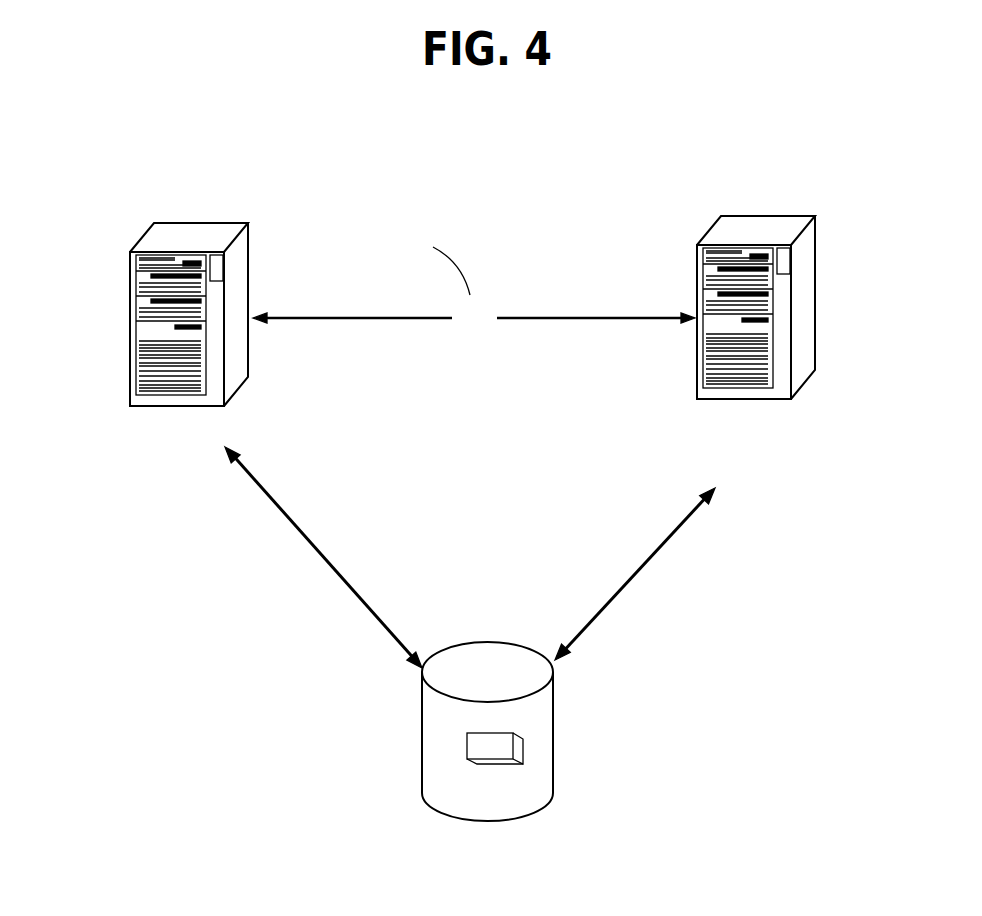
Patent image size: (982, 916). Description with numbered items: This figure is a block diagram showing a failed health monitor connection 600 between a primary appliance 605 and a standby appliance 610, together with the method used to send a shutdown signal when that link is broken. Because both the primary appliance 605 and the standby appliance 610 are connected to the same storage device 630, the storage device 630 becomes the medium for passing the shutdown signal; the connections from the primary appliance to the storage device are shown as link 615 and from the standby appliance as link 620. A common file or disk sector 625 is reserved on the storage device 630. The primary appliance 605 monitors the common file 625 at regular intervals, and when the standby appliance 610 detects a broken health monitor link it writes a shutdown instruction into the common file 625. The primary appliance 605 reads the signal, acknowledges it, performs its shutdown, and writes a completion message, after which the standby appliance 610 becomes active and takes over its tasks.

The failed health monitor connection 600 is at (485, 295).
The primary appliance 605 is at (130, 312).
The standby appliance 610 is at (817, 300).
The link between primary appliance and storage device 615 is at (317, 552).
The link between standby appliance and storage device 620 is at (637, 577).
The common file or disk sector 625 is at (477, 759).
The storage device 630 is at (555, 752).